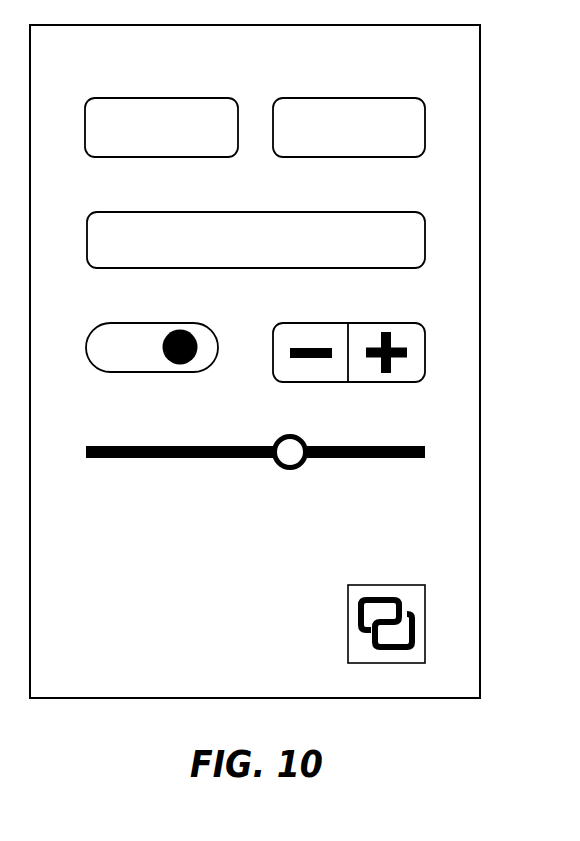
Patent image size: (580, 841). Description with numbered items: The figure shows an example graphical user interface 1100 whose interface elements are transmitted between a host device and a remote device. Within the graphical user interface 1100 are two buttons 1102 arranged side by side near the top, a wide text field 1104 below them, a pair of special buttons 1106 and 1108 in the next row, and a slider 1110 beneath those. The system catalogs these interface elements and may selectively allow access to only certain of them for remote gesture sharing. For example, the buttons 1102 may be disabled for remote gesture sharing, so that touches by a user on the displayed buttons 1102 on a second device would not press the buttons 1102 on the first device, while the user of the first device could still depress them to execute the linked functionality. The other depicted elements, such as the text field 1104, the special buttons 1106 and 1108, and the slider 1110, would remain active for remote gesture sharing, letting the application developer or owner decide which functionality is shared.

The graphical user interface 1100 is at (255, 350).
The buttons 1102 is at (255, 118).
The text field 1104 is at (256, 230).
The special button 1106 is at (152, 338).
The special button 1108 is at (349, 343).
The slider 1110 is at (413, 447).